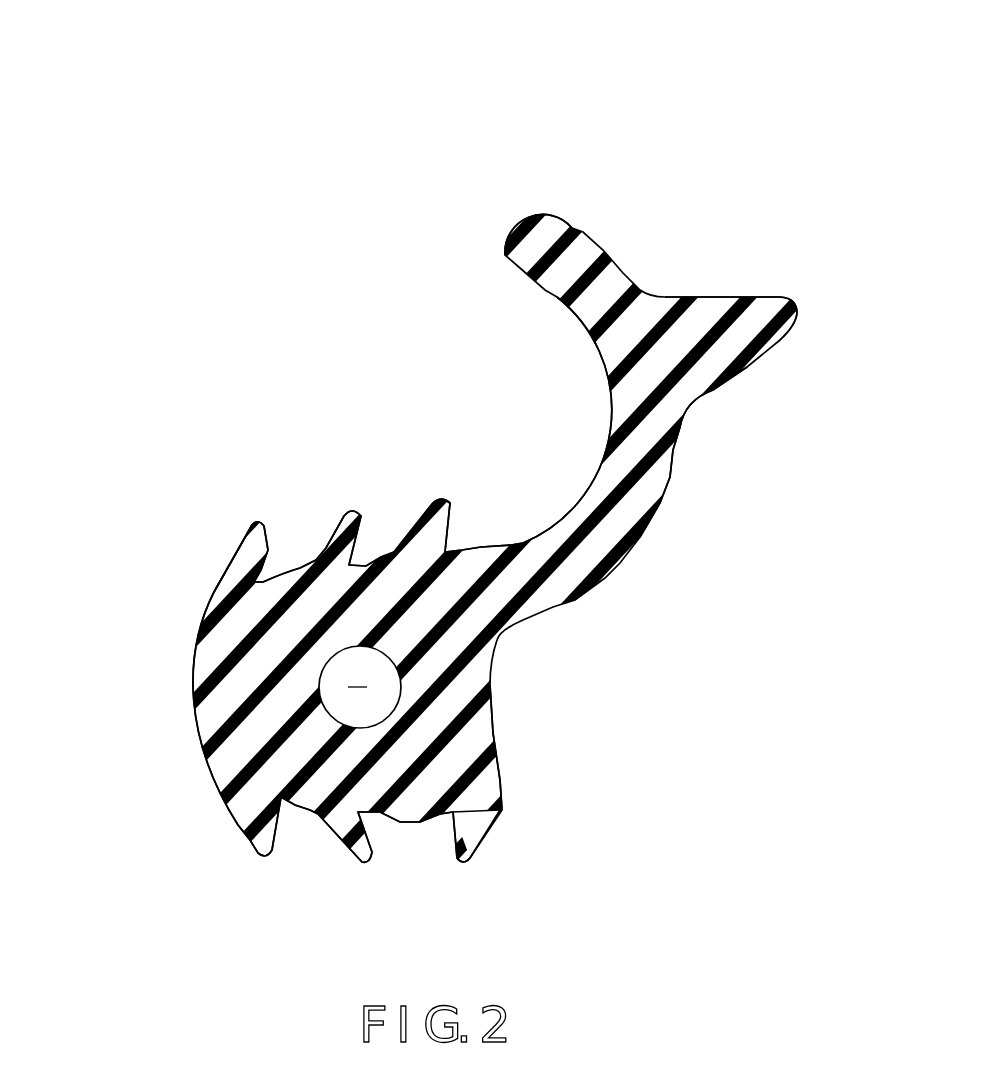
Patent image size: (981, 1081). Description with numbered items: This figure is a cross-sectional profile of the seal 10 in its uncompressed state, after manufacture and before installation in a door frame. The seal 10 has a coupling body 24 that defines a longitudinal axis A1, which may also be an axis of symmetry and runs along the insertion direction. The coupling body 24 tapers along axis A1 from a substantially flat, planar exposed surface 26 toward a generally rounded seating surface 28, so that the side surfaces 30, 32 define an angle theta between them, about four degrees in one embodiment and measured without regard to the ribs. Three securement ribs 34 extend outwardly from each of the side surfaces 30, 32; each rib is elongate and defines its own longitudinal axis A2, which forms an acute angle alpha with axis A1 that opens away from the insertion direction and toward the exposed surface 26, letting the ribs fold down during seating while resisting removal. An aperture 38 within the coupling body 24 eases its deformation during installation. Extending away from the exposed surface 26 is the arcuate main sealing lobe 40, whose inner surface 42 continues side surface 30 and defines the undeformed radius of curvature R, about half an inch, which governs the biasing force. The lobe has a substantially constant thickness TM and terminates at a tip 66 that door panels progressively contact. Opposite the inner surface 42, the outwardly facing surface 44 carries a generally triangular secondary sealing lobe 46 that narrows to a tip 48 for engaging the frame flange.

The seal 10 is at (436, 108).
The coupling body 24 is at (243, 603).
The exposed surface 26 is at (501, 781).
The seating surface 28 is at (197, 729).
The side surface 30 is at (283, 570).
The side surface 32 is at (390, 820).
The securement ribs 34 is at (248, 522).
The aperture 38 is at (388, 700).
The main sealing lobe 40 is at (633, 503).
The inner surface 42 is at (598, 362).
The outwardly facing surface 44 is at (667, 483).
The secondary sealing lobe 46 is at (766, 297).
The tip 48 is at (799, 312).
The tip 66 is at (512, 228).
The thickness TM is at (525, 320).
The radius of curvature R is at (574, 494).
The longitudinal axis A1 is at (115, 688).
The longitudinal axis A2 is at (278, 948).
The angle alpha is at (411, 576).
The angle theta is at (210, 585).